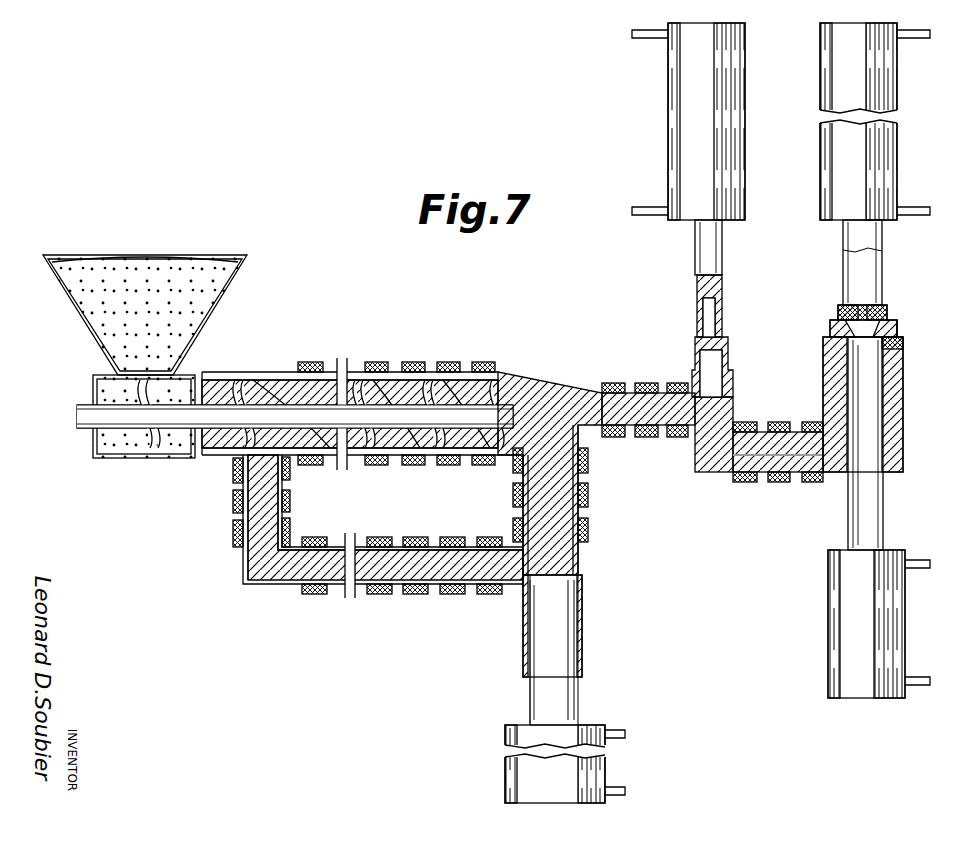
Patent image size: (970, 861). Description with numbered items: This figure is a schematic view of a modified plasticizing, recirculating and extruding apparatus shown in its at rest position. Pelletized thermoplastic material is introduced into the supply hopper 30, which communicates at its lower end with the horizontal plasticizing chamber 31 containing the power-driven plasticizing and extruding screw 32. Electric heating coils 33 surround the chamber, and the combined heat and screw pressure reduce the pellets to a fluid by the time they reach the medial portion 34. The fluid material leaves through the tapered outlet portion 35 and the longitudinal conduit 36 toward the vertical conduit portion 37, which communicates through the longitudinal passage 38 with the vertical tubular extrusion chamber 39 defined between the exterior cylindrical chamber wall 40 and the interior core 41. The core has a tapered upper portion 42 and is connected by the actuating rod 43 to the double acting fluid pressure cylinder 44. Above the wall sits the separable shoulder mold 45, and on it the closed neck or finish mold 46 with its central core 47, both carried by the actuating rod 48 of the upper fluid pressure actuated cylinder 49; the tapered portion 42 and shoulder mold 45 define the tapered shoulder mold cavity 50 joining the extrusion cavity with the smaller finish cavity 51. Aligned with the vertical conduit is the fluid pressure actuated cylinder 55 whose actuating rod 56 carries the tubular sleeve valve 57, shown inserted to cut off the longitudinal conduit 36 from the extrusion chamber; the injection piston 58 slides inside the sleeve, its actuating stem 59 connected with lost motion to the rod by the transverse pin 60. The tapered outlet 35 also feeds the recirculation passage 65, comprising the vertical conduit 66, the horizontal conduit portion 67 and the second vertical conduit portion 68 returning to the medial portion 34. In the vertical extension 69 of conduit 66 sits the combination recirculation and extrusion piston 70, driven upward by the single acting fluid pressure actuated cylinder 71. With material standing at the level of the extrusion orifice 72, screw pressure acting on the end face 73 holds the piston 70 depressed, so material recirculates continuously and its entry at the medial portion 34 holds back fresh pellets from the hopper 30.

The supply hopper 30 is at (237, 262).
The plasticizing chamber 31 is at (150, 458).
The plasticizing and extruding screw 32 is at (97, 392).
The electric heating coils 33 is at (322, 362).
The medial portion 34 is at (206, 456).
The tapered outlet portion 35 is at (540, 380).
The longitudinal conduit 36 is at (648, 428).
The vertical conduit portion 37 is at (697, 450).
The longitudinal passage 38 is at (763, 436).
The tubular extrusion chamber 39 is at (885, 390).
The exterior cylindrical chamber wall 40 is at (905, 420).
The interior core 41 is at (847, 367).
The tapered upper portion 42 is at (888, 322).
The actuating rod 43 is at (880, 512).
The double acting fluid pressure cylinder 44 is at (830, 600).
The shoulder mold 45 is at (898, 327).
The neck or finish mold 46 is at (884, 312).
The central core 47 is at (860, 305).
The actuating rod 48 is at (843, 268).
The upper fluid pressure actuated cylinder 49 is at (900, 118).
The shoulder mold cavity 50 is at (833, 330).
The finish cavity 51 is at (840, 312).
The fluid pressure actuated cylinder 55 is at (668, 120).
The actuating rod 56 is at (697, 243).
The tubular sleeve valve 57 is at (695, 350).
The injection piston 58 is at (700, 362).
The actuating stem 59 is at (706, 313).
The transverse pin 60 is at (700, 298).
The recirculation passage 65 is at (420, 588).
The vertical conduit 66 is at (588, 512).
The horizontal conduit portion 67 is at (390, 545).
The second vertical conduit portion 68 is at (250, 517).
The vertical extension 69 is at (585, 632).
The recirculation and extrusion piston 70 is at (580, 690).
The single acting fluid pressure actuated cylinder 71 is at (603, 762).
The extrusion orifice 72 is at (897, 342).
The end face 73 is at (532, 590).